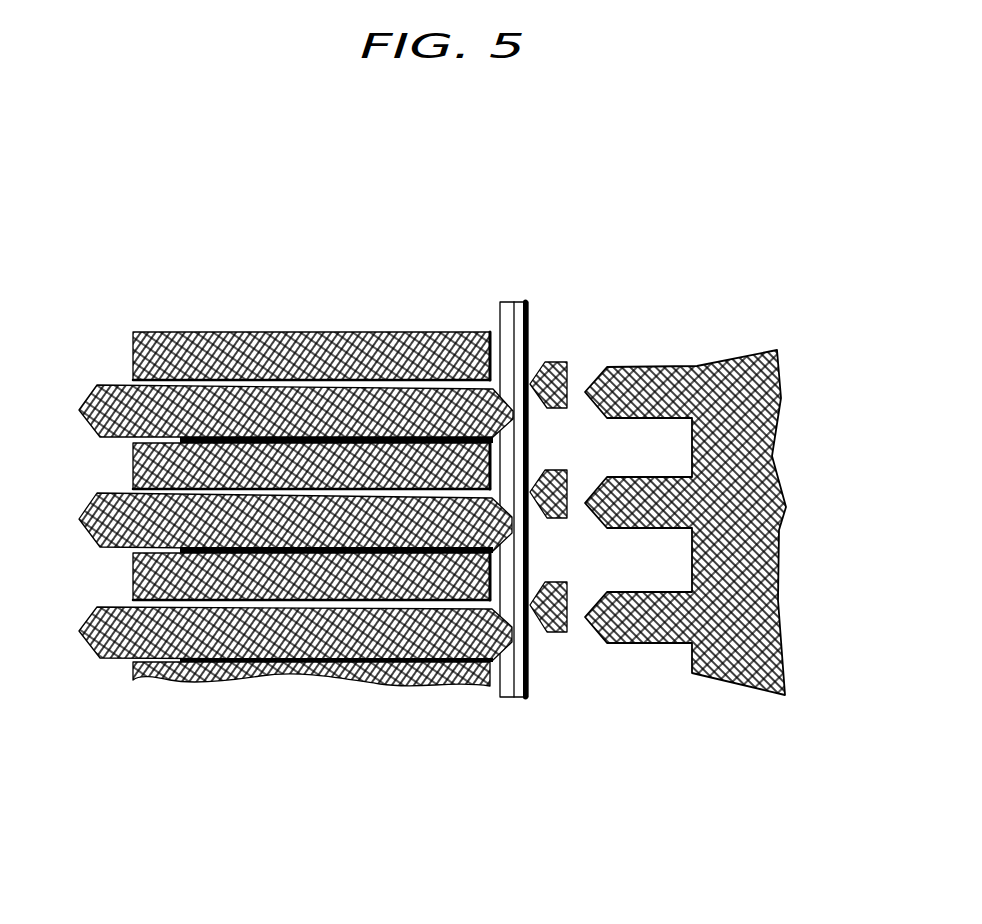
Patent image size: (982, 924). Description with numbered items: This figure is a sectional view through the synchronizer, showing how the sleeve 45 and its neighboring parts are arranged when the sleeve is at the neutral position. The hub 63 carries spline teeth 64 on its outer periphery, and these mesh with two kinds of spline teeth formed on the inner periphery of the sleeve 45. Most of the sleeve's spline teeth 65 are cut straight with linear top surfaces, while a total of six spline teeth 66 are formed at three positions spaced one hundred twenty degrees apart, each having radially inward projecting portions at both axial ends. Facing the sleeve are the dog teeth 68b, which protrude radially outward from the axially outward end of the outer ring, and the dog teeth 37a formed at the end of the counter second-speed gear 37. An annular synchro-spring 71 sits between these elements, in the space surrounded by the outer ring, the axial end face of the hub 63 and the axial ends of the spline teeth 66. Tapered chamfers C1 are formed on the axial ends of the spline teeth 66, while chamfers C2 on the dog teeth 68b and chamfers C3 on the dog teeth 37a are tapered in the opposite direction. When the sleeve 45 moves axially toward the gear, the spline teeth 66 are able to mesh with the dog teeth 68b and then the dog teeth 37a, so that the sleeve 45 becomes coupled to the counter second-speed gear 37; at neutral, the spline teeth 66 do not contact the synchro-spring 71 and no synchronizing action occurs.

The counter second-speed gear 37 is at (733, 498).
The dog teeth 37a is at (677, 477).
The sleeve 45 is at (105, 386).
The hub 63 is at (187, 335).
The spline teeth 64 is at (318, 470).
The spline teeth 65 is at (343, 640).
The spline teeth 66 is at (445, 525).
The dog teeth 68b is at (550, 515).
The synchro-spring 71 is at (505, 313).
The chamfers C1 is at (502, 432).
The chamfers C2 is at (537, 367).
The chamfers C3 is at (590, 372).